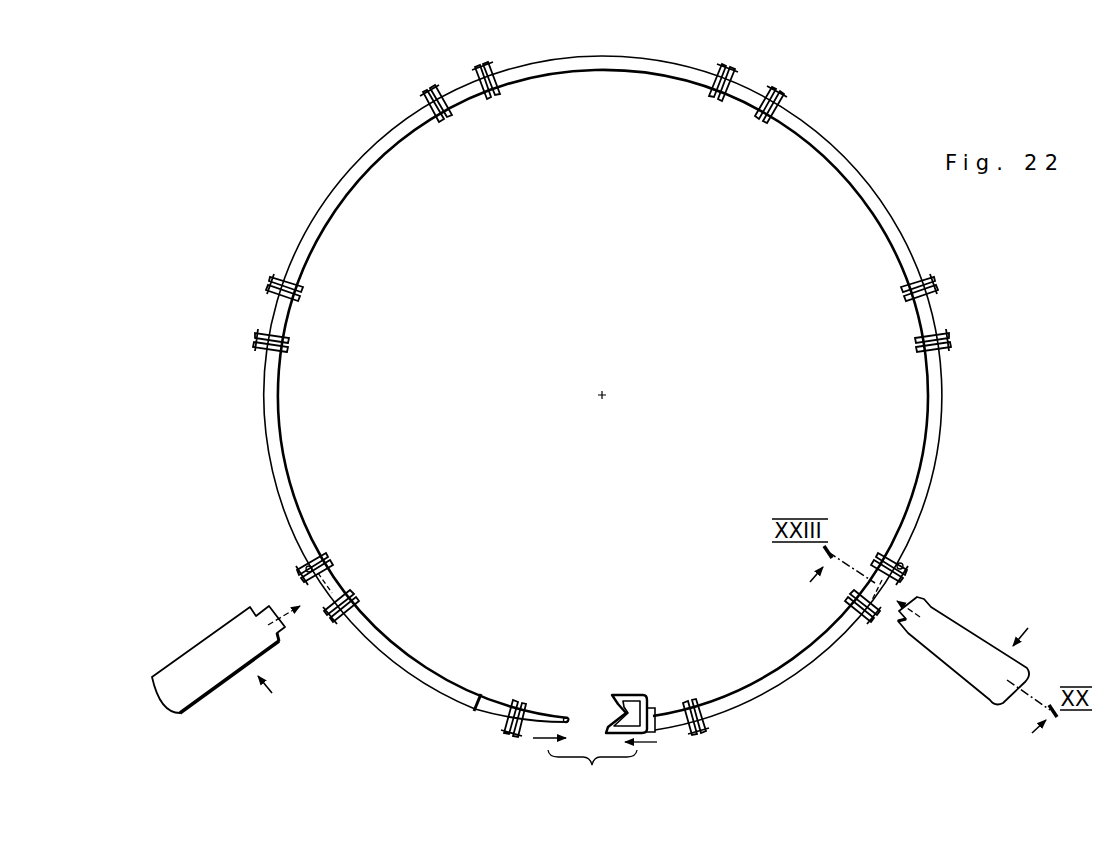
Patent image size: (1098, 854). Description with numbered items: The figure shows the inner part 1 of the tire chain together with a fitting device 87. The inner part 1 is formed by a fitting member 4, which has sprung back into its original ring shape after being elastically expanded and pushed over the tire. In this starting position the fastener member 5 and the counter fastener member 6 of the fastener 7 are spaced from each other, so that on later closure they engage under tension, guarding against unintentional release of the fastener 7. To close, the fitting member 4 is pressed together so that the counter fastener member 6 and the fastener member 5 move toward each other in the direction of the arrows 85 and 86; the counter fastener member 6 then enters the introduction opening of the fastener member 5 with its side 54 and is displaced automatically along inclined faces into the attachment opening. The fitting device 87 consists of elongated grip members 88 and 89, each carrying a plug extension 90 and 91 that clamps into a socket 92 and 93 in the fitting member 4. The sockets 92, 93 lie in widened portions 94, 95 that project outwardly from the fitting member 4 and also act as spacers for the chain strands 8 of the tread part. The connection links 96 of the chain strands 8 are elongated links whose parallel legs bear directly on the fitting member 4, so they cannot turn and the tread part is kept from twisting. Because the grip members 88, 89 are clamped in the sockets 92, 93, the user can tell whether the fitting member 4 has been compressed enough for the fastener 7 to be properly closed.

The inner part 1 is at (343, 225).
The fitting member 4 is at (276, 405).
The fastener member 5 is at (628, 692).
The counter fastener member 6 is at (533, 713).
The fastener 7 is at (592, 767).
The chain strands 8 is at (920, 567).
The side 54 is at (568, 716).
The arrow 85 is at (545, 738).
The arrow 86 is at (655, 738).
The fitting device 87 is at (656, 660).
The grip member 88 is at (197, 687).
The grip member 89 is at (960, 663).
The plug extension 90 is at (285, 636).
The plug extension 91 is at (907, 615).
The socket 92 is at (350, 587).
The socket 93 is at (875, 562).
The widened portion 94 is at (313, 572).
The widened portion 95 is at (903, 565).
The connection links 96 is at (282, 336).